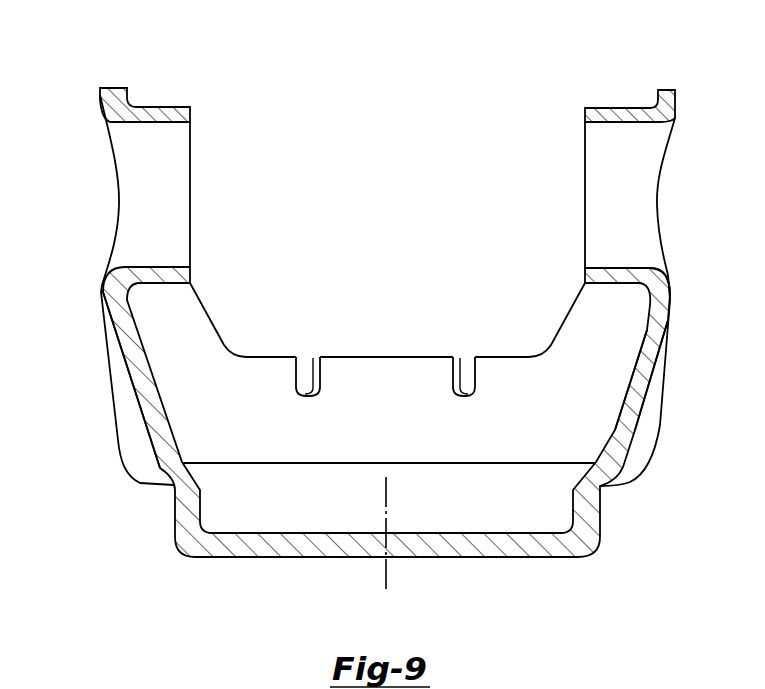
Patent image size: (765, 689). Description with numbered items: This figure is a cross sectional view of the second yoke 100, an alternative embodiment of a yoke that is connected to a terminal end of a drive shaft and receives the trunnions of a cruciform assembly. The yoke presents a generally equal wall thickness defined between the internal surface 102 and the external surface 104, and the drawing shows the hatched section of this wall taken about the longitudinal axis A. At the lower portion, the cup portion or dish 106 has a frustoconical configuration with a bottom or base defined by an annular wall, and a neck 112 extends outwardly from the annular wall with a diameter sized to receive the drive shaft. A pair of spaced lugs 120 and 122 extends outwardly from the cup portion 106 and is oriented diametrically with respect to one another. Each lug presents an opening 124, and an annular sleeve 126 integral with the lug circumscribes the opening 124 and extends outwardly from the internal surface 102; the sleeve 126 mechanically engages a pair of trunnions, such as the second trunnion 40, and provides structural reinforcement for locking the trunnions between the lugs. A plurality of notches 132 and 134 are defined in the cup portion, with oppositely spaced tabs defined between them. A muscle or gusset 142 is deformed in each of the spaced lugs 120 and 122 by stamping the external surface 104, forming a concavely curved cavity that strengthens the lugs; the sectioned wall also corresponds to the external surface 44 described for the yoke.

The second yoke 100 is at (376, 188).
The internal surface 102 is at (394, 417).
The external surface 104 is at (672, 418).
The cup portion 106 is at (267, 462).
The neck 112 is at (578, 530).
The spaced lug 120 is at (667, 98).
The spaced lug 122 is at (116, 96).
The opening 124 is at (108, 196).
The annular sleeve 126 is at (158, 113).
The notch 132 is at (468, 392).
The notch 134 is at (307, 392).
The muscle 142 is at (146, 398).
The second trunnion 40 is at (620, 394).
The external surface 44 is at (675, 303).
The longitudinal axis A is at (384, 505).